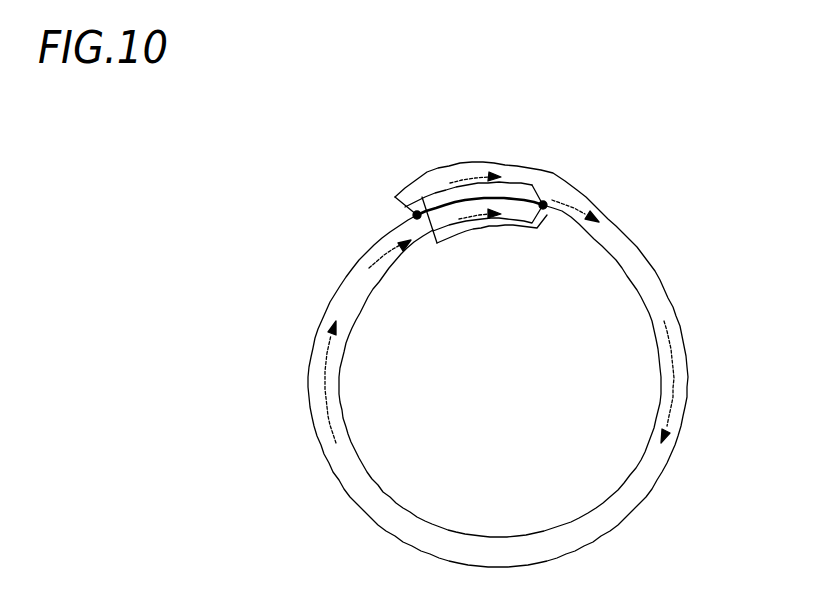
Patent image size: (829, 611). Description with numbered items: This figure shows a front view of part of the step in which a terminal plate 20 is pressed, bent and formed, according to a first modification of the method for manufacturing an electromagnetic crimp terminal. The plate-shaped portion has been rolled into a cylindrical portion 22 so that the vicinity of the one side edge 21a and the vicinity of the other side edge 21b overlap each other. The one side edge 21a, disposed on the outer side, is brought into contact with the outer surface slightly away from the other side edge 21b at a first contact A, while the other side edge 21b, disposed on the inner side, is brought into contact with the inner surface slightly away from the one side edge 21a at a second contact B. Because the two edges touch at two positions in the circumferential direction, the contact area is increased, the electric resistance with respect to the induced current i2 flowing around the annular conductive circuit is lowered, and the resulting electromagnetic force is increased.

The terminal plate 20 is at (173, 249).
The one side edge 21a is at (416, 215).
The other side edge 21b is at (543, 206).
The cylindrical portion 22 is at (350, 474).
The contact A is at (416, 212).
The contact B is at (544, 204).
The induced current i2 is at (672, 370).